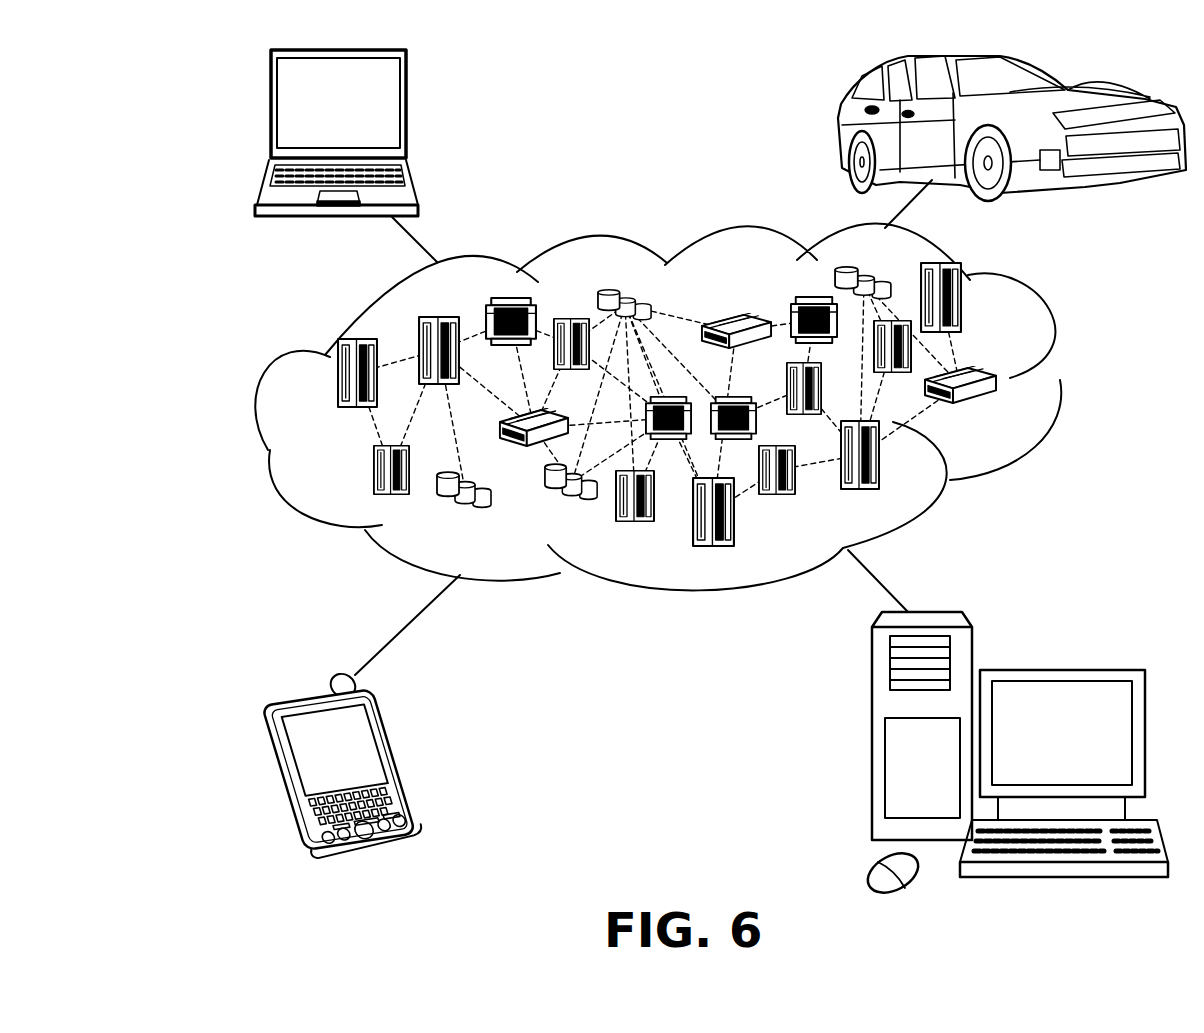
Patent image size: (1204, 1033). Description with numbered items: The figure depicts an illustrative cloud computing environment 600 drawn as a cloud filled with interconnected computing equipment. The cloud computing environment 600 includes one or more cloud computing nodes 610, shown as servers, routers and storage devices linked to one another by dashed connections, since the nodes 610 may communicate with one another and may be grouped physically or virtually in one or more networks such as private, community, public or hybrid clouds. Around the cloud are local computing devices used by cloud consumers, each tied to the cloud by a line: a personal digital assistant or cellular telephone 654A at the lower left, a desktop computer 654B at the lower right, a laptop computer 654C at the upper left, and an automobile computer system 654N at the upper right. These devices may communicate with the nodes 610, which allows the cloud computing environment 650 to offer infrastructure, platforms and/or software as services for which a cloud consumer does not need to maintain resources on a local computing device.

The cloud computing environment 600 is at (100, 74).
The cloud computing nodes 610 is at (1010, 413).
The cloud computing environment 650 is at (1058, 382).
The personal digital assistant (PDA) or cellular telephone 654A is at (396, 762).
The desktop computer 654B is at (1060, 667).
The laptop computer 654C is at (406, 113).
The automobile computer system 654N is at (838, 128).